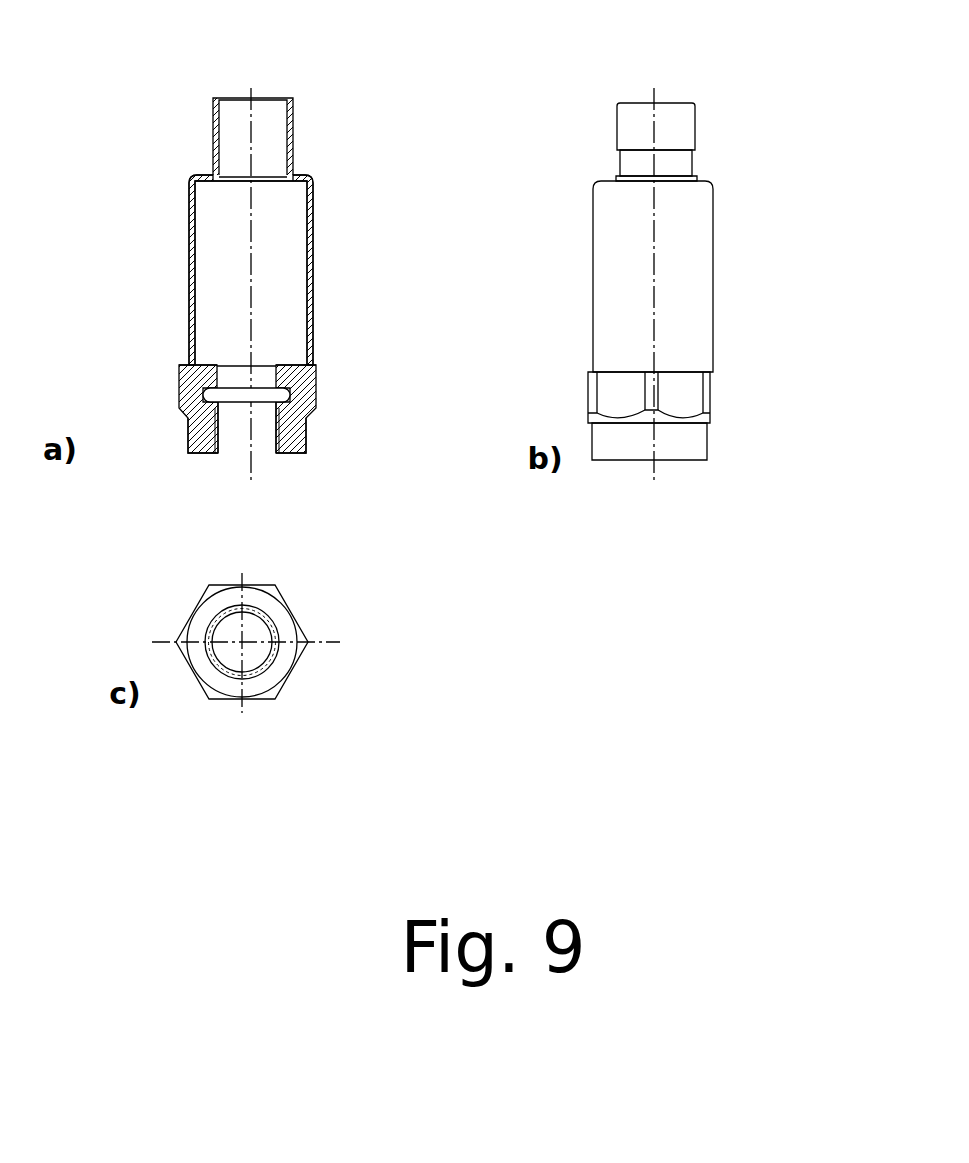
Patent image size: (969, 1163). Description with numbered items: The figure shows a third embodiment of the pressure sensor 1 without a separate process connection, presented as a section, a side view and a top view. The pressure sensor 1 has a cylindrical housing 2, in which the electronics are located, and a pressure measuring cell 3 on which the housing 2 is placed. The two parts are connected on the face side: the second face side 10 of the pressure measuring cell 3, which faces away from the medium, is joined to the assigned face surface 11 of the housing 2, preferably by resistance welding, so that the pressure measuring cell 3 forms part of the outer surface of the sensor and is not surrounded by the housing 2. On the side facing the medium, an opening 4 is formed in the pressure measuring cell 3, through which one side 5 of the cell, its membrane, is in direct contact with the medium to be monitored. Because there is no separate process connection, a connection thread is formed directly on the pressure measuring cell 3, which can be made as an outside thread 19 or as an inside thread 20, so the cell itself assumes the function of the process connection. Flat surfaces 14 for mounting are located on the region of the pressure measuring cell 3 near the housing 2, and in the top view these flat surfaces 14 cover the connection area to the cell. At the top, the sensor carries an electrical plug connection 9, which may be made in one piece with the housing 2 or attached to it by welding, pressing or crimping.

The pressure sensor 1 is at (357, 206).
The housing 2 is at (190, 213).
The pressure measuring cell 3 is at (562, 399).
The opening 4 is at (260, 443).
The side of the pressure measuring cell 5 is at (222, 388).
The plug connection 9 is at (213, 102).
The second face side 10 is at (187, 367).
The face surface 11 is at (313, 368).
The flat surfaces 14 is at (688, 385).
The outside thread 19 is at (307, 437).
The inside thread 20 is at (188, 456).